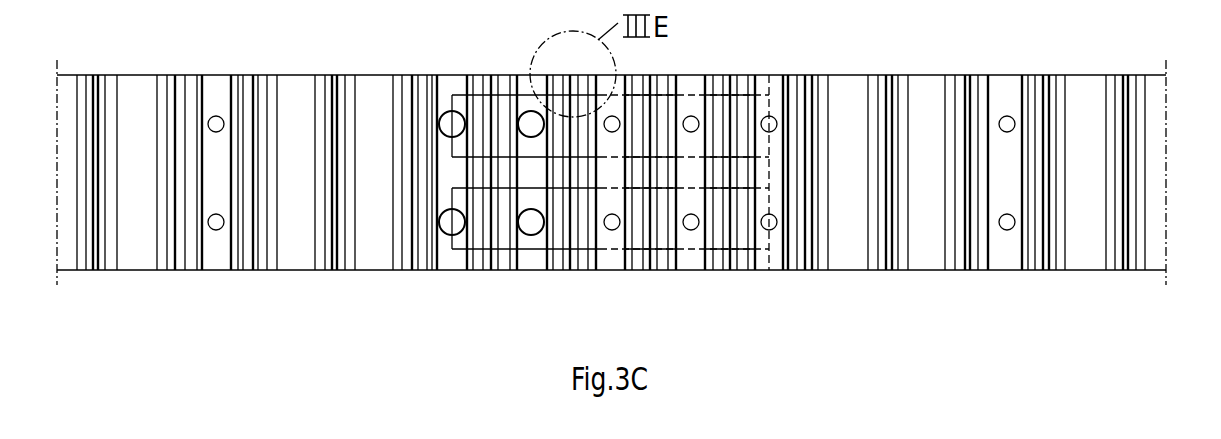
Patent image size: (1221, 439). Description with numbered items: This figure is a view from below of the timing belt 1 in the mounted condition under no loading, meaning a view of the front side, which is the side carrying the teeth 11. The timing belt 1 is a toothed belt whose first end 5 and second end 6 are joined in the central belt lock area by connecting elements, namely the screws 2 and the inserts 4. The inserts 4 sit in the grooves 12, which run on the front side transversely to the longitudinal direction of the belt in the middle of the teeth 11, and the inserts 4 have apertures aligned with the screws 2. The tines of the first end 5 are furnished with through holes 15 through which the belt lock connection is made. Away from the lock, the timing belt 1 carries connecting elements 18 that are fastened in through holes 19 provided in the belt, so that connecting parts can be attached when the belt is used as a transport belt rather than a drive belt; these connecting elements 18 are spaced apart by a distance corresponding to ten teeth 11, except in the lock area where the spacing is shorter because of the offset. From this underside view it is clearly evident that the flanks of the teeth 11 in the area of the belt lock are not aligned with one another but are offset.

The timing belt 1 is at (865, 293).
The screws 2 is at (767, 228).
The inserts 4 is at (688, 262).
The first end 5 is at (1085, 85).
The second end 6 is at (298, 85).
The teeth 11 is at (924, 90).
The grooves 12 is at (530, 262).
The through holes 15 is at (525, 113).
The connecting elements 18 is at (215, 85).
The through holes 19 is at (213, 228).